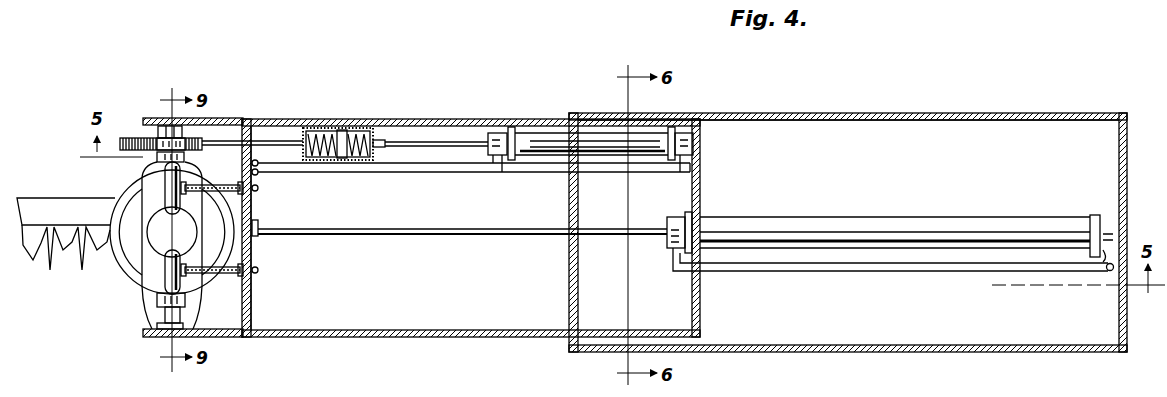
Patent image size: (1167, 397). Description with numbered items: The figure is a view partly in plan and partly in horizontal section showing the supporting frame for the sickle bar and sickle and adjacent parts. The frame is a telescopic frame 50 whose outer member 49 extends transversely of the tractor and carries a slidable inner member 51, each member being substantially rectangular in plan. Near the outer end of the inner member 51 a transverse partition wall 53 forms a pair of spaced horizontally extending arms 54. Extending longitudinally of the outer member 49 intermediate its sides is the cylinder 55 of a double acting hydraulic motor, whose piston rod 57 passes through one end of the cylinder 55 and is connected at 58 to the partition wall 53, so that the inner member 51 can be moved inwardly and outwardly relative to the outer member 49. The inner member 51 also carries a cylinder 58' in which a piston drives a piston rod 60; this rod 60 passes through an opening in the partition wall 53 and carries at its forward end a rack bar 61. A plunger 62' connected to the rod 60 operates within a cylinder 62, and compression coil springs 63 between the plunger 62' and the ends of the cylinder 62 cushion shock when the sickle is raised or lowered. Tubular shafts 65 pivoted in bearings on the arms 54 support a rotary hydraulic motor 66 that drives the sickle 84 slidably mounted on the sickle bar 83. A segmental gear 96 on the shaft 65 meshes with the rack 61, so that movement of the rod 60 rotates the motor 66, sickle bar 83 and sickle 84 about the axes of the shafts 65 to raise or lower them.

The outer member 49 is at (973, 114).
The telescopic frame 50 is at (1088, 100).
The inner member 51 is at (390, 338).
The partition wall 53 is at (252, 253).
The arms 54 is at (152, 118).
The cylinder 55 is at (895, 223).
The piston rod 57 is at (500, 235).
The connection 58 is at (471, 195).
The cylinder 58' is at (590, 120).
The piston rod 60 is at (392, 140).
The rack bar 61 is at (127, 138).
The cylinder 62 is at (338, 120).
The plunger 62' is at (357, 120).
The compression coil springs 63 is at (323, 160).
The tubular shafts 65 is at (170, 188).
The rotary hydraulic motor 66 is at (157, 228).
The sickle bar 83 is at (38, 252).
The sickle 84 is at (52, 207).
The segmental gear 96 is at (198, 148).